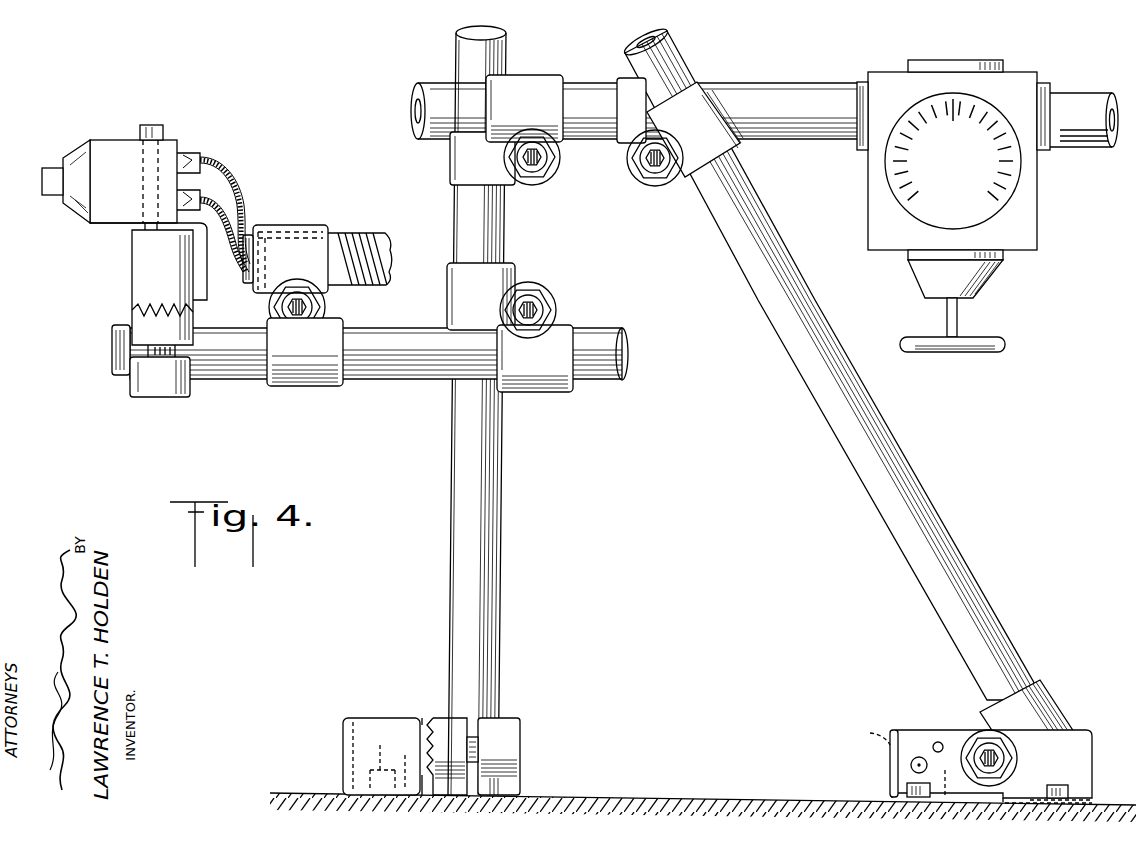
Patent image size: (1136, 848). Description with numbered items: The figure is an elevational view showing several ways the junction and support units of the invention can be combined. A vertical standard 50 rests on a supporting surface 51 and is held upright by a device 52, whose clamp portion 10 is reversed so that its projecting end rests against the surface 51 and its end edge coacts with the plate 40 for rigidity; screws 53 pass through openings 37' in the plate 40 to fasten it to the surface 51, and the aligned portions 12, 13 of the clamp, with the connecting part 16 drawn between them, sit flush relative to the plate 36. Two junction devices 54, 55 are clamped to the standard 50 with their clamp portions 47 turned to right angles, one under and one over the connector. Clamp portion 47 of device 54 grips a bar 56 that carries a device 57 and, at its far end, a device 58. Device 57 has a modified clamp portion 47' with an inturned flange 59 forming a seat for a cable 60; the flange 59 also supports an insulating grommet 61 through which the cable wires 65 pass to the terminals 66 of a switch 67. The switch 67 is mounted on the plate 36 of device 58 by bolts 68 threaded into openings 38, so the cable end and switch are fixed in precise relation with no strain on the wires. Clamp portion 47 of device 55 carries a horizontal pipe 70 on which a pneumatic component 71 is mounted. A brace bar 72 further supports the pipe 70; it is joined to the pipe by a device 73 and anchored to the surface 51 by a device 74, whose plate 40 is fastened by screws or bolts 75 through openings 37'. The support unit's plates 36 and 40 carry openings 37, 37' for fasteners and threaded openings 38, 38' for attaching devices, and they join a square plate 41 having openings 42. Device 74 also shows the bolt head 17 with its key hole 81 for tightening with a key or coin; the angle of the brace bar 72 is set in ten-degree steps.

The clamp portion 10 is at (140, 390).
The aligned portion 12 is at (515, 722).
The aligned portion 13 is at (441, 725).
The connecting member 16 is at (470, 750).
The bolt head 17 is at (1008, 758).
The plate 36 is at (175, 232).
The opening 37 is at (915, 737).
The opening 37' is at (715, 782).
The internally threaded opening 38 is at (516, 490).
The threaded opening 38' is at (1013, 793).
The elongated plate 40 is at (1108, 766).
The square-shaped plate 41 is at (893, 730).
The opening 42 is at (872, 731).
The clamp portion 47 is at (614, 233).
The clamp portion 47' is at (290, 239).
The standard 50 is at (500, 548).
The surface 51 is at (612, 793).
The device 52 is at (383, 684).
The screw 53 is at (374, 756).
The device 54 is at (580, 312).
The device 55 is at (563, 184).
The bar 56 is at (391, 370).
The device 57 is at (343, 212).
The device 58 is at (100, 295).
The inturned flange 59 is at (252, 223).
The cable 60 is at (385, 240).
The grommet 61 is at (248, 280).
The cable wires 65 is at (214, 200).
The terminals 66 is at (185, 195).
The switch 67 is at (112, 148).
The bolts 68 is at (155, 127).
The pipe 70 is at (795, 100).
The pneumatic component 71 is at (1030, 218).
The brace bar 72 is at (918, 482).
The device 73 is at (659, 200).
The device 74 is at (1084, 708).
The screws or bolts 75 is at (905, 787).
The key hole 81 is at (993, 750).